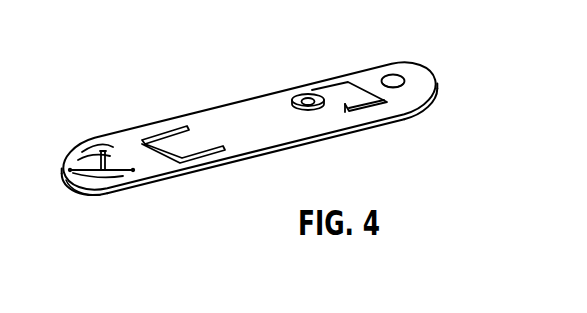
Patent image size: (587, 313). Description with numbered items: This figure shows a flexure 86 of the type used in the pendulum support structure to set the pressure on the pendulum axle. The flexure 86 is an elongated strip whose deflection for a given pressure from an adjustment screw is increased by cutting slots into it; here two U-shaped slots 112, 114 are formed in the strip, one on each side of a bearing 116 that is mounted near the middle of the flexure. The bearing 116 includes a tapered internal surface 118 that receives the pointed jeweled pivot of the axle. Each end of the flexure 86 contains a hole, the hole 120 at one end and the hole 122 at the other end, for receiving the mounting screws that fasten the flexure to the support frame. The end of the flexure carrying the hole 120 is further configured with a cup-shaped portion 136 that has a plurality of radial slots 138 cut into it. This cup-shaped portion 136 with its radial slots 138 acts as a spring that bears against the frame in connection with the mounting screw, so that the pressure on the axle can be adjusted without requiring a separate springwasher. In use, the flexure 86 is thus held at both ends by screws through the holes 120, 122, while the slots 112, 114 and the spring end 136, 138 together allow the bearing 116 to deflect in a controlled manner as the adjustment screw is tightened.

The flexure 86 is at (238, 102).
The U-shaped slot 112 is at (170, 160).
The U-shaped slot 114 is at (395, 111).
The bearing 116 is at (328, 99).
The tapered internal surface 118 is at (306, 99).
The hole 120 is at (84, 186).
The hole 122 is at (396, 82).
The cup-shaped portion 136 is at (112, 178).
The radial slots 138 is at (120, 175).